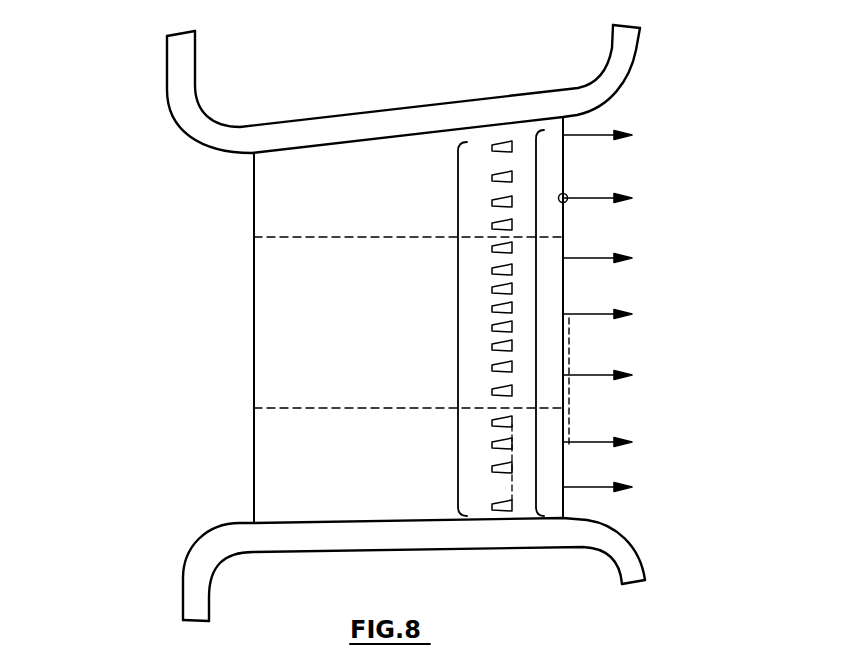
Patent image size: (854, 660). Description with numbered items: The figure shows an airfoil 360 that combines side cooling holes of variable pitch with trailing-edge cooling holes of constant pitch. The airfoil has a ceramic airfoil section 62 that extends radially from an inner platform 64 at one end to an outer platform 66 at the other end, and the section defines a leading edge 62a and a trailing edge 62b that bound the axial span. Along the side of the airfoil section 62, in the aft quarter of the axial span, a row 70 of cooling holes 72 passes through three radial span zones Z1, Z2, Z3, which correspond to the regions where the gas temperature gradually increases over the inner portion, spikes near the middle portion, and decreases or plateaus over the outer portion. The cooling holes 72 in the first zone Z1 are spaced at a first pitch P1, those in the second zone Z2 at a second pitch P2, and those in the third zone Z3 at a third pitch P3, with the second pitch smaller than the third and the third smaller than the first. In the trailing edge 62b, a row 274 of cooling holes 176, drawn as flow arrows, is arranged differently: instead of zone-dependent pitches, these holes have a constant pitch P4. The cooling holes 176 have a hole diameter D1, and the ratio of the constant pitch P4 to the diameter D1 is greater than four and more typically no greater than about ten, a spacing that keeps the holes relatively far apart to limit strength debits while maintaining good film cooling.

The airfoil 360 is at (158, 357).
The ceramic airfoil section 62 is at (268, 187).
The leading edge 62a is at (254, 215).
The trailing edge 62b is at (565, 153).
The inner platform 64 is at (625, 557).
The outer platform 66 is at (180, 88).
The row of cooling holes 70 is at (458, 337).
The cooling holes 72 is at (512, 221).
The cooling holes 176 is at (563, 263).
The row of cooling holes 274 is at (537, 349).
The hole diameter D1 is at (568, 197).
The first pitch P1 is at (512, 442).
The second pitch P2 is at (513, 265).
The third pitch P3 is at (513, 187).
The constant pitch P4 is at (568, 352).
The first zone Z1 is at (410, 460).
The second zone Z2 is at (405, 320).
The third zone Z3 is at (410, 191).